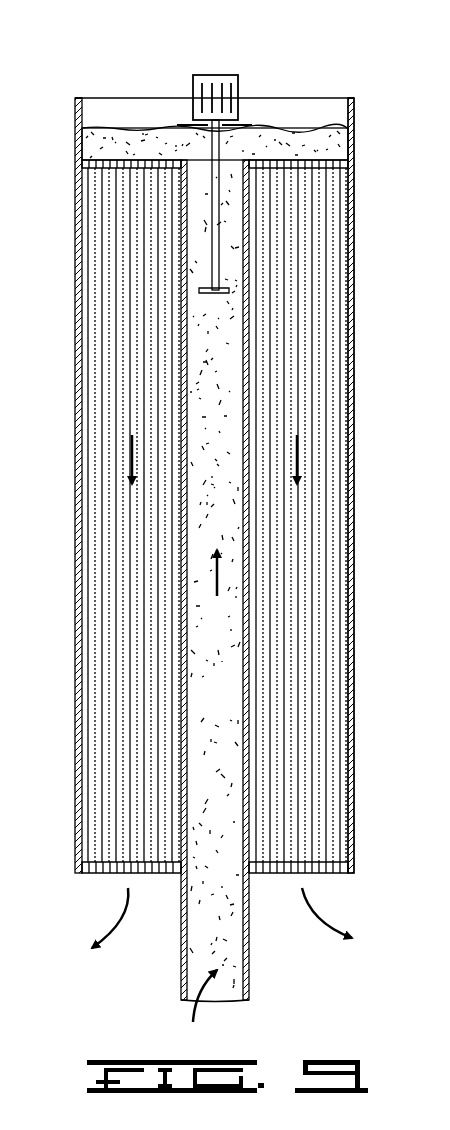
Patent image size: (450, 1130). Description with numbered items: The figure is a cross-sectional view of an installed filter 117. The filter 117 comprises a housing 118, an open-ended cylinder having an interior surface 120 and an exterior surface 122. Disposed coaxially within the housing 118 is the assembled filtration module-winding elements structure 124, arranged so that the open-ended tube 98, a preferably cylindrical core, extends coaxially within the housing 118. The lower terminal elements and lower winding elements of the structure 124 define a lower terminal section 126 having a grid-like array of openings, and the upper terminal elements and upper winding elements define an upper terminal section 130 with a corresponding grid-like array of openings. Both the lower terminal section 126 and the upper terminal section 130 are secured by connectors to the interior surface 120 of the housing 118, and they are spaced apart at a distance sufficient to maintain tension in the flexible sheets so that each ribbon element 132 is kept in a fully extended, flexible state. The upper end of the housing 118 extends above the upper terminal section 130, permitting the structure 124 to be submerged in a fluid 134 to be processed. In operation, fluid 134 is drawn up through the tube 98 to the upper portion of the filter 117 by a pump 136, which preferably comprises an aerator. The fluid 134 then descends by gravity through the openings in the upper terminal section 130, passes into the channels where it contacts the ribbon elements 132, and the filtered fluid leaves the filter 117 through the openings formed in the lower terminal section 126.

The open-ended tube 98 is at (250, 977).
The filter 117 is at (356, 98).
The housing 118 is at (354, 133).
The interior surface 120 is at (84, 102).
The exterior surface 122 is at (75, 283).
The assembled filtration module-winding elements structure 124 is at (330, 875).
The lower terminal section 126 is at (105, 873).
The upper terminal section 130 is at (106, 160).
The ribbon element 132 is at (85, 618).
The fluid 134 is at (155, 143).
The pump 136 is at (216, 75).